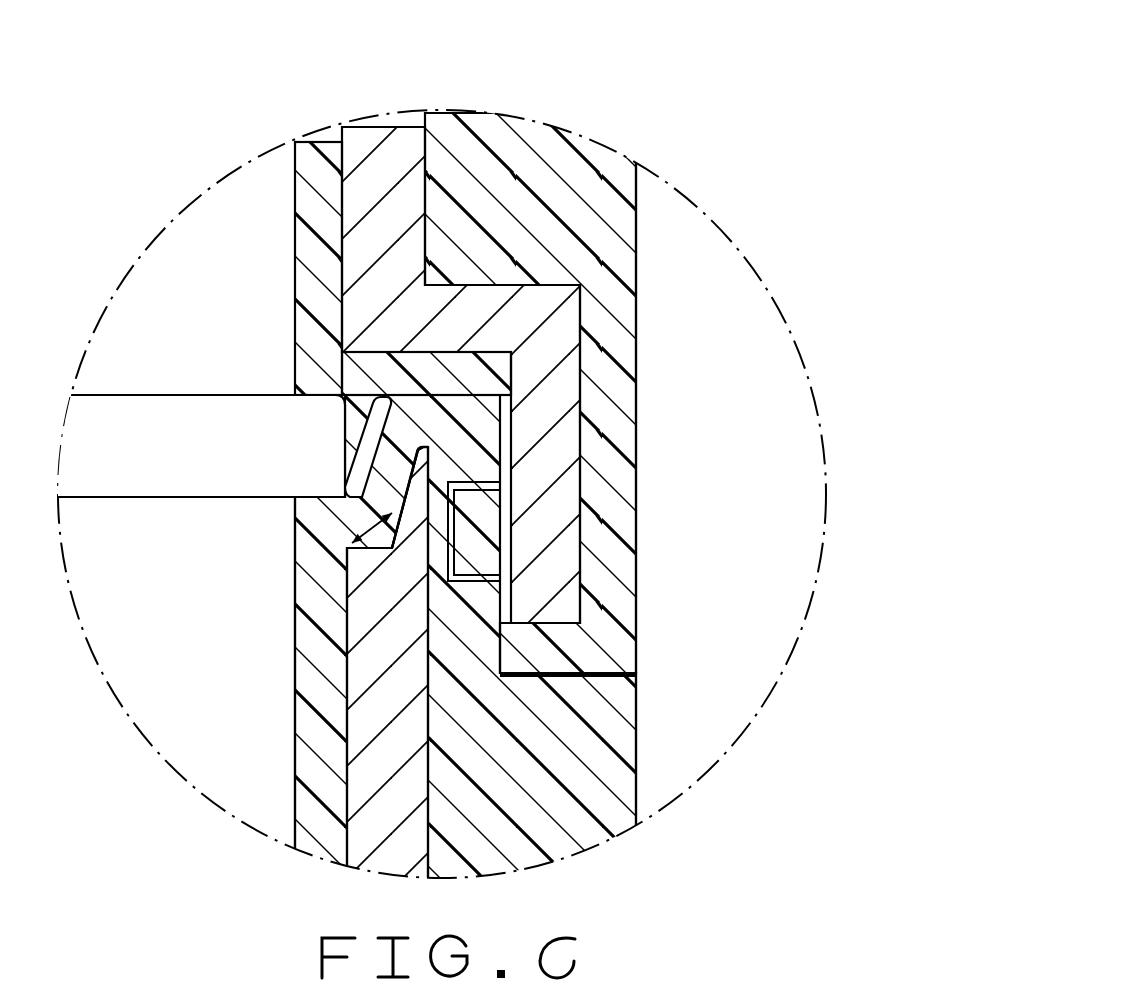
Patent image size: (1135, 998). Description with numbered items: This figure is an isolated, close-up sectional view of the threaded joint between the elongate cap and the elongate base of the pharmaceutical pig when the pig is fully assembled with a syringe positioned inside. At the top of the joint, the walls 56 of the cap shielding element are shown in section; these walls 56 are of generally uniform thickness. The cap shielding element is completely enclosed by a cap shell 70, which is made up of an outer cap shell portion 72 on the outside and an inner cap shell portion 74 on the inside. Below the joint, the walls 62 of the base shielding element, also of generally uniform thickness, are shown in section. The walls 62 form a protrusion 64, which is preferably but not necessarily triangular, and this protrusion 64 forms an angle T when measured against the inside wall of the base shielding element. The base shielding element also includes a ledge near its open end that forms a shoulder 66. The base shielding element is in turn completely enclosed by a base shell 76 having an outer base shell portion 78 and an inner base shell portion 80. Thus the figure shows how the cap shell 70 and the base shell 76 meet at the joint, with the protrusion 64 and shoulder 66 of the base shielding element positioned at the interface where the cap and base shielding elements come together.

The walls of the cap shielding element 56 is at (393, 152).
The walls of the base shielding element 62 is at (363, 727).
The protrusion 64 is at (420, 493).
The shoulder 66 is at (428, 521).
The cap shell 70 is at (648, 173).
The outer cap shell portion 72 is at (520, 158).
The inner cap shell portion 74 is at (323, 132).
The base shell 76 is at (645, 697).
The outer base shell portion 78 is at (560, 758).
The inner base shell portion 80 is at (300, 715).